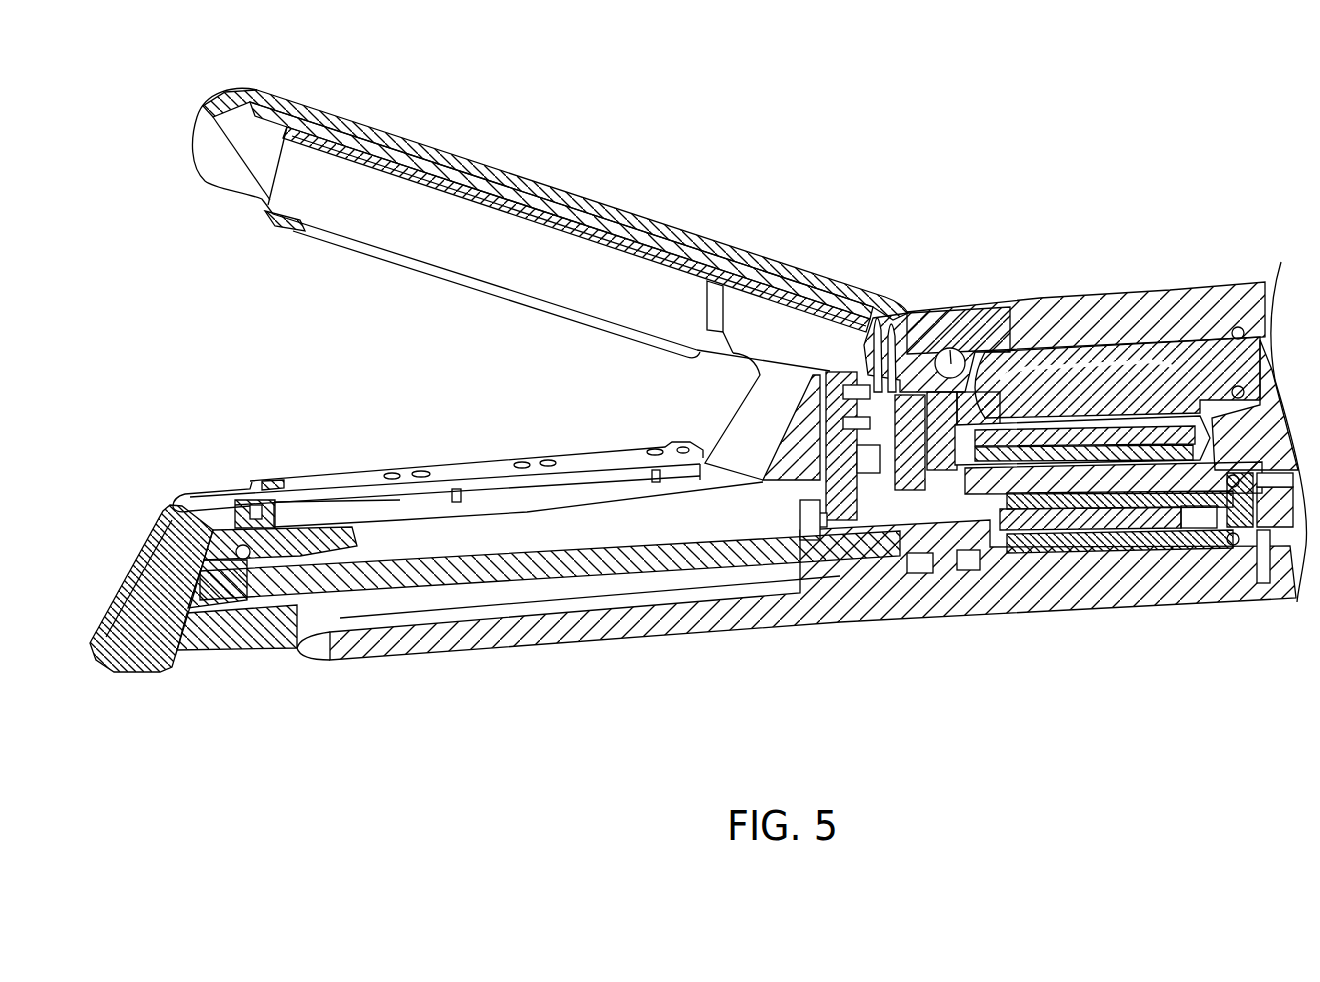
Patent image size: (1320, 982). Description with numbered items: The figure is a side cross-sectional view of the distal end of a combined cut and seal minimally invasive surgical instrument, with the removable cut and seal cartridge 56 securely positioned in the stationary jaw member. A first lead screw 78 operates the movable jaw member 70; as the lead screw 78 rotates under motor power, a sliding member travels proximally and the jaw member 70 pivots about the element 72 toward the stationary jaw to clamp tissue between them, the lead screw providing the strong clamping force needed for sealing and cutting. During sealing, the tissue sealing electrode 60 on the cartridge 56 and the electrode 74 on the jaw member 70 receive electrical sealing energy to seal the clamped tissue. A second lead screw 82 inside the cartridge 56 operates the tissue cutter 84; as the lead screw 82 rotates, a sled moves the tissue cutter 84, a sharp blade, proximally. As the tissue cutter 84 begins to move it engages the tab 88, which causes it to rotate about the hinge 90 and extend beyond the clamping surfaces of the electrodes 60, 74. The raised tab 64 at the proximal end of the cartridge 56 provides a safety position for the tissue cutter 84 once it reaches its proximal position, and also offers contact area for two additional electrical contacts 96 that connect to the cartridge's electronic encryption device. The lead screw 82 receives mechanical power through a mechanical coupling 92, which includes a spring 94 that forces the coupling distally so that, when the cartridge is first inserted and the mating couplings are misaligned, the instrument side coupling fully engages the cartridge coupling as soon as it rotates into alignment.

The cut and seal cartridge 56 is at (148, 672).
The tissue sealing electrode 60 is at (285, 484).
The raised tab 64 is at (737, 433).
The movable jaw member 70 is at (245, 92).
The pivot pin 72 is at (953, 350).
The electrode 74 is at (290, 234).
The first lead screw 78 is at (1177, 377).
The second lead screw 82 is at (597, 567).
The tissue cutter 84 is at (303, 557).
The tab 88 is at (248, 505).
The hinge 90 is at (243, 560).
The mechanical coupling 92 is at (997, 553).
The spring 94 is at (1107, 553).
The electrical contacts 96 is at (892, 385).